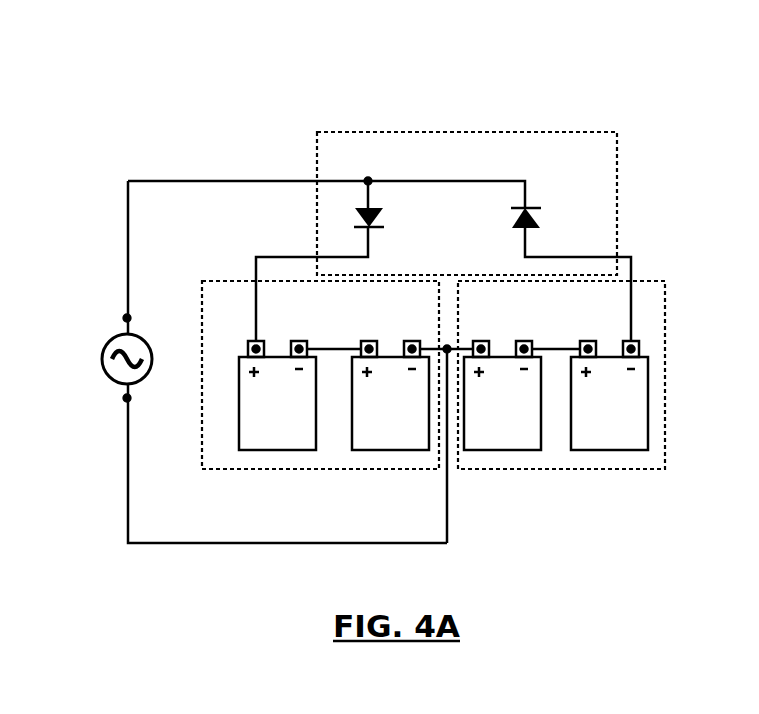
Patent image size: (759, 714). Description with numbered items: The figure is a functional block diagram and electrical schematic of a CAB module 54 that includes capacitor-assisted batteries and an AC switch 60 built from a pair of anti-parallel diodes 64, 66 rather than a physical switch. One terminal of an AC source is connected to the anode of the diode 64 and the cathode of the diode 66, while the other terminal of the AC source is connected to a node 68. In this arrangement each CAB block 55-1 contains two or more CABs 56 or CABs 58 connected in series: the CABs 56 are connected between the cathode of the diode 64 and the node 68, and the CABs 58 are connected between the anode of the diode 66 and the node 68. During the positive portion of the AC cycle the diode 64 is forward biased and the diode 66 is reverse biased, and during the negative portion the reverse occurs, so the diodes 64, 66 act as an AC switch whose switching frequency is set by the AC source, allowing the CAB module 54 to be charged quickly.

The CAB module 54 is at (234, 140).
The AC switch 60 is at (354, 131).
The diode 64 is at (383, 217).
The diode 66 is at (540, 228).
The CAB block 55-1 is at (232, 281).
The node 68 is at (447, 349).
The CAB 56 is at (230, 453).
The CAB 58 is at (510, 461).